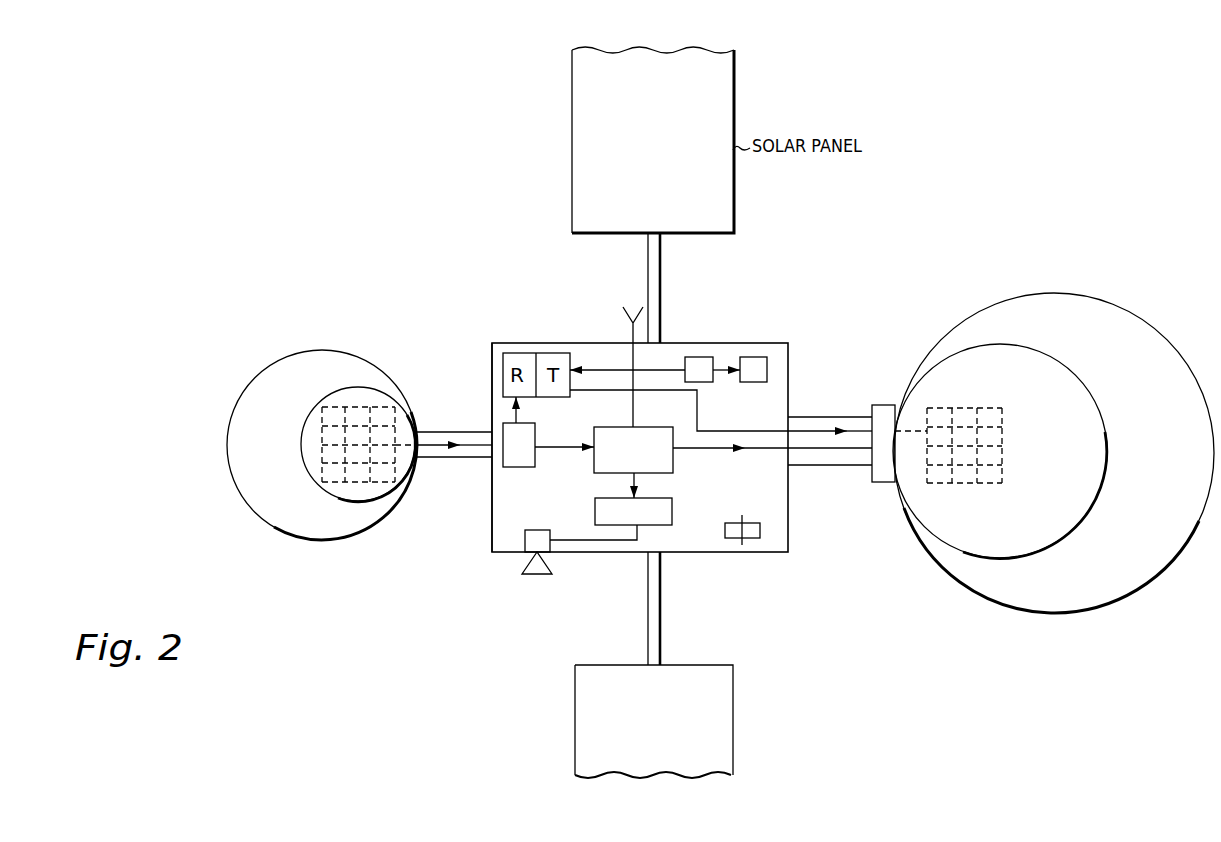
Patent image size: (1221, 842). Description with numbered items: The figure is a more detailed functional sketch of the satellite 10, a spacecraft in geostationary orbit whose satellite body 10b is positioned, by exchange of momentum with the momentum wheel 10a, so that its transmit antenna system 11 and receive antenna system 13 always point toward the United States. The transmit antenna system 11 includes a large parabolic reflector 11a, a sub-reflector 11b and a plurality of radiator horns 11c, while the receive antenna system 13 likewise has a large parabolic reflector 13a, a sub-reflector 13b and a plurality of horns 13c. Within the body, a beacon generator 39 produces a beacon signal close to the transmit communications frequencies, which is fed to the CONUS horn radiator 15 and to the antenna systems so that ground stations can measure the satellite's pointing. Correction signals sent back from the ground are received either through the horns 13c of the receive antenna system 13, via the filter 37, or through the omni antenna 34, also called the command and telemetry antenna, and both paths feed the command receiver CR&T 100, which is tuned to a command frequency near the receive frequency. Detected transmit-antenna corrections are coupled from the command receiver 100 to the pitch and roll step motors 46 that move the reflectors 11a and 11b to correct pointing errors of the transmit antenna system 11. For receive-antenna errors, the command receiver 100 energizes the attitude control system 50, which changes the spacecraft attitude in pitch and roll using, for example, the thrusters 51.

The satellite 10 is at (532, 614).
The momentum wheel 10a is at (728, 537).
The satellite body 10b is at (492, 515).
The transmit antenna system 11 is at (1053, 471).
The large parabolic reflector 11a is at (1160, 578).
The sub-reflector 11b is at (1080, 530).
The radiator horns 11c is at (1003, 410).
The receive antenna system 13 is at (322, 465).
The large parabolic reflector 13a is at (388, 506).
The sub-reflector 13b is at (366, 500).
The horns 13c is at (358, 405).
The horn radiator 15 is at (758, 357).
The omni antenna 34 is at (623, 310).
The filter 37 is at (537, 432).
The beacon generator 39 is at (701, 357).
The pitch and roll step motors 46 is at (888, 482).
The attitude control system 50 is at (673, 511).
The thrusters 51 is at (551, 564).
The command receiver 100 is at (594, 463).